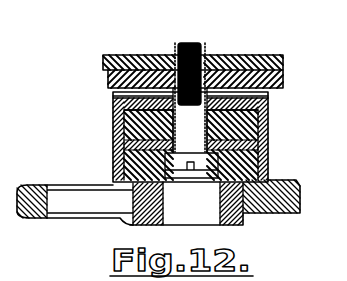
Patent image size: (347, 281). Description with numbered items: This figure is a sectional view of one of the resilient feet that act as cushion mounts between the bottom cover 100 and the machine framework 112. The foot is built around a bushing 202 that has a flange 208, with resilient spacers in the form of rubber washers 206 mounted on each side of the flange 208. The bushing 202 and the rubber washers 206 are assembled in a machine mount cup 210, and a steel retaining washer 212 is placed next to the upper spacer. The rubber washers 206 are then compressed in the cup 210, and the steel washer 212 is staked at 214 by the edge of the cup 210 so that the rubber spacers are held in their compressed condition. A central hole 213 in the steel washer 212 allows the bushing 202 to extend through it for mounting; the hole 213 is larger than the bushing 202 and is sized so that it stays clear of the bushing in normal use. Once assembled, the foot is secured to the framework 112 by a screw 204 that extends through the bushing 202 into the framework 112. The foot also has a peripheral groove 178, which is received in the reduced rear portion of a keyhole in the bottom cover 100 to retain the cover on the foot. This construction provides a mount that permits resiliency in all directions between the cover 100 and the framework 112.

The bottom cover 100 is at (300, 180).
The machine framework 112 is at (288, 82).
The peripheral groove 178 is at (131, 209).
The bushing 202 is at (171, 52).
The screw 204 is at (206, 43).
The rubber washers 206 is at (270, 158).
The flange 208 is at (116, 151).
The machine mount cup 210 is at (252, 218).
The steel retaining washer 212 is at (270, 94).
The central hole 213 is at (134, 54).
The staked portion 214 is at (116, 99).